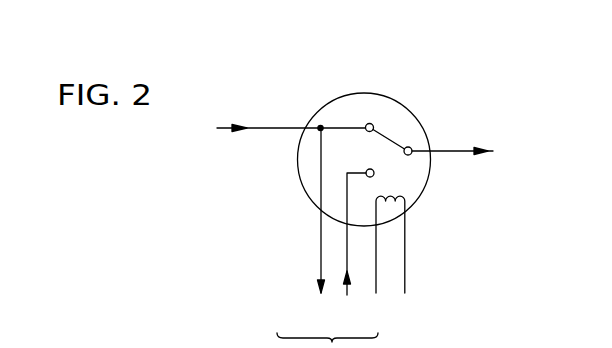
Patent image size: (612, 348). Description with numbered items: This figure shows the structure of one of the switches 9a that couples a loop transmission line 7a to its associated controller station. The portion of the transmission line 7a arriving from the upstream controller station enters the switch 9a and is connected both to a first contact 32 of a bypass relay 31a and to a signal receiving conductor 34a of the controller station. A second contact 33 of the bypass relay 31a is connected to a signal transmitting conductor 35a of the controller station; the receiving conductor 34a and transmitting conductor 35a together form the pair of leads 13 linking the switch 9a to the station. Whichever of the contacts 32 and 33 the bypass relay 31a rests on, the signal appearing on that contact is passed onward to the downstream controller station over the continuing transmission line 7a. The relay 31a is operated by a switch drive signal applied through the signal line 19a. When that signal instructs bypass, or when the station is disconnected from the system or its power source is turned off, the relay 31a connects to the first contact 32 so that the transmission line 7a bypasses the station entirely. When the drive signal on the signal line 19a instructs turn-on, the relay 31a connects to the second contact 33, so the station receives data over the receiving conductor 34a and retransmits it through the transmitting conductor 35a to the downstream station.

The loop transmission line 7a is at (221, 127).
The switch 9a is at (426, 191).
The bypass relay 31a is at (388, 137).
The first contact 32 is at (372, 124).
The second contact 33 is at (366, 176).
The signal receiving conductor 34a is at (321, 293).
The signal transmitting conductor 35a is at (347, 295).
The signal line 19a is at (393, 287).
The control line pair 13 is at (327, 340).